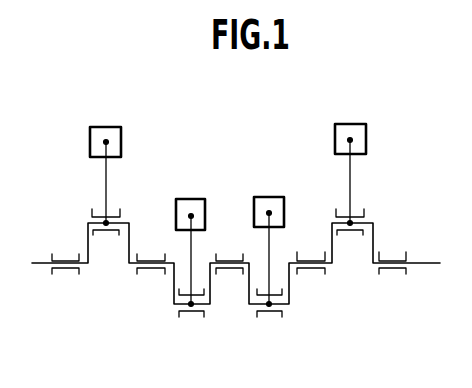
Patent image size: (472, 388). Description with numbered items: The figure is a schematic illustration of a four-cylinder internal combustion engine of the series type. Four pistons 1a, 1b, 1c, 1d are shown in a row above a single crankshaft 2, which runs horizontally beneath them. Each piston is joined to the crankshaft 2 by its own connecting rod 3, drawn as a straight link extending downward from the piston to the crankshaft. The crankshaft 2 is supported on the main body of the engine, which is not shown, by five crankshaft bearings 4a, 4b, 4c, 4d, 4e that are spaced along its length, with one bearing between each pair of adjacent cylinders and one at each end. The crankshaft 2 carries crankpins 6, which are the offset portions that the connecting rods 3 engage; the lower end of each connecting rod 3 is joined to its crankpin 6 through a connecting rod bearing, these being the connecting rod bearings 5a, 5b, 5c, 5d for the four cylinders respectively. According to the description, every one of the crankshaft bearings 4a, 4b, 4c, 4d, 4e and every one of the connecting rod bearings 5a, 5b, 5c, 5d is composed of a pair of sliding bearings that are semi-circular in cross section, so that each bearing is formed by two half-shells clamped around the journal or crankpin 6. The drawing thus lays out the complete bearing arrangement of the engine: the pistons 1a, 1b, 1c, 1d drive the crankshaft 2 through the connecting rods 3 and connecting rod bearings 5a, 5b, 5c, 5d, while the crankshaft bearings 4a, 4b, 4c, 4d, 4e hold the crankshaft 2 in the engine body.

The piston 1a is at (118, 127).
The piston 1b is at (199, 199).
The piston 1c is at (280, 197).
The piston 1d is at (366, 126).
The crankshaft 2 is at (428, 262).
The connecting rod 3 is at (106, 180).
The crankshaft bearing 4a is at (60, 270).
The crankshaft bearing 4b is at (148, 270).
The crankshaft bearing 4c is at (228, 270).
The crankshaft bearing 4d is at (310, 270).
The crankshaft bearing 4e is at (392, 270).
The connecting rod bearing 5a is at (100, 212).
The connecting rod bearing 5b is at (195, 313).
The connecting rod bearing 5c is at (272, 313).
The connecting rod bearing 5d is at (358, 211).
The crankpin 6 is at (94, 236).